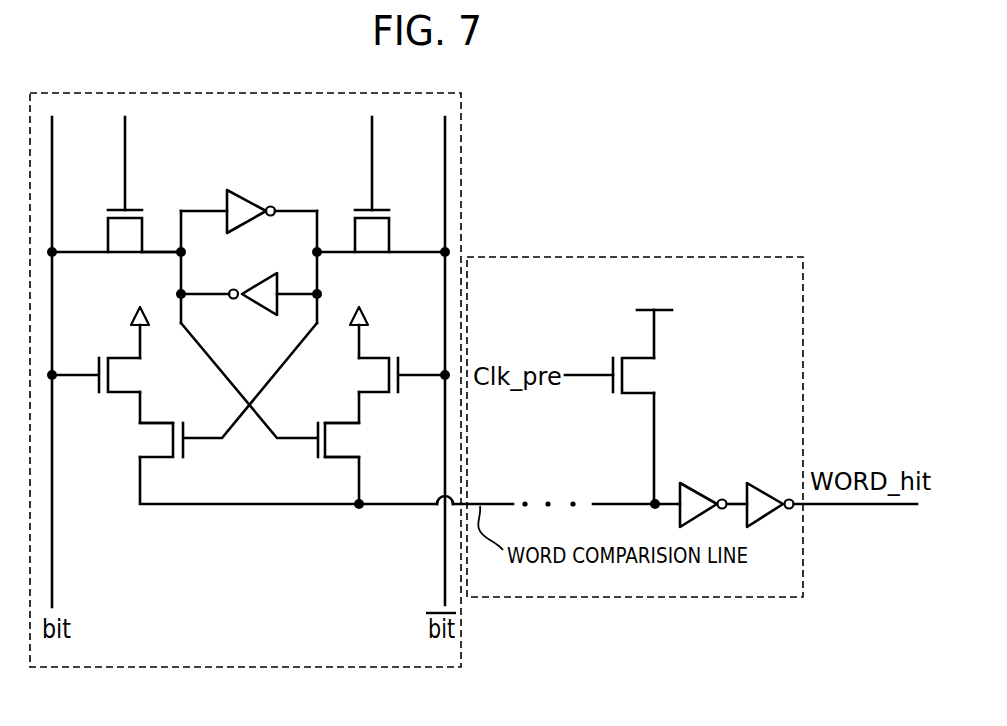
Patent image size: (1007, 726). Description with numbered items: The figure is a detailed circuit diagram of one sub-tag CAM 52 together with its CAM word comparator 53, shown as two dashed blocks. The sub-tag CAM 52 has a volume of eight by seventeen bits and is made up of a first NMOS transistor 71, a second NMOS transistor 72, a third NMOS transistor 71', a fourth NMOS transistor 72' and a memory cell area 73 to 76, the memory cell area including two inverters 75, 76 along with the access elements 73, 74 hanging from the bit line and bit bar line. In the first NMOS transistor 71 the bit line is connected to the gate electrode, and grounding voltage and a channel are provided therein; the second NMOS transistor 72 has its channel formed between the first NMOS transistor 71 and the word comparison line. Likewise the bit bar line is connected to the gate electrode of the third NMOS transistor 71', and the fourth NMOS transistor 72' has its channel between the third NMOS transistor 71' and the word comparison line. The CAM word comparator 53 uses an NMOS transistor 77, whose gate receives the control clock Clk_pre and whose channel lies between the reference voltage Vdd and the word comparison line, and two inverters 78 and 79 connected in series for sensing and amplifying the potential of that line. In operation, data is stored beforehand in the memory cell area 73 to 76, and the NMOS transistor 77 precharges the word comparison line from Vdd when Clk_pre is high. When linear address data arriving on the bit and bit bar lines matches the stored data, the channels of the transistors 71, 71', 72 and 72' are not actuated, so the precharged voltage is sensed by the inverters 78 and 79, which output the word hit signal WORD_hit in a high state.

The sub-tag CAM 52 is at (208, 66).
The CAM word comparator 53 is at (711, 257).
The first NMOS transistor 71 is at (112, 349).
The third NMOS transistor 71' is at (389, 349).
The second NMOS transistor 72 is at (162, 413).
The fourth NMOS transistor 72' is at (338, 411).
The memory cell area element 73 is at (108, 233).
The memory cell area element 74 is at (403, 214).
The memory cell area inverter 75 is at (240, 199).
The memory cell area inverter 76 is at (264, 281).
The NMOS transistor 77 is at (642, 356).
The inverter 78 is at (695, 483).
The inverter 79 is at (761, 483).